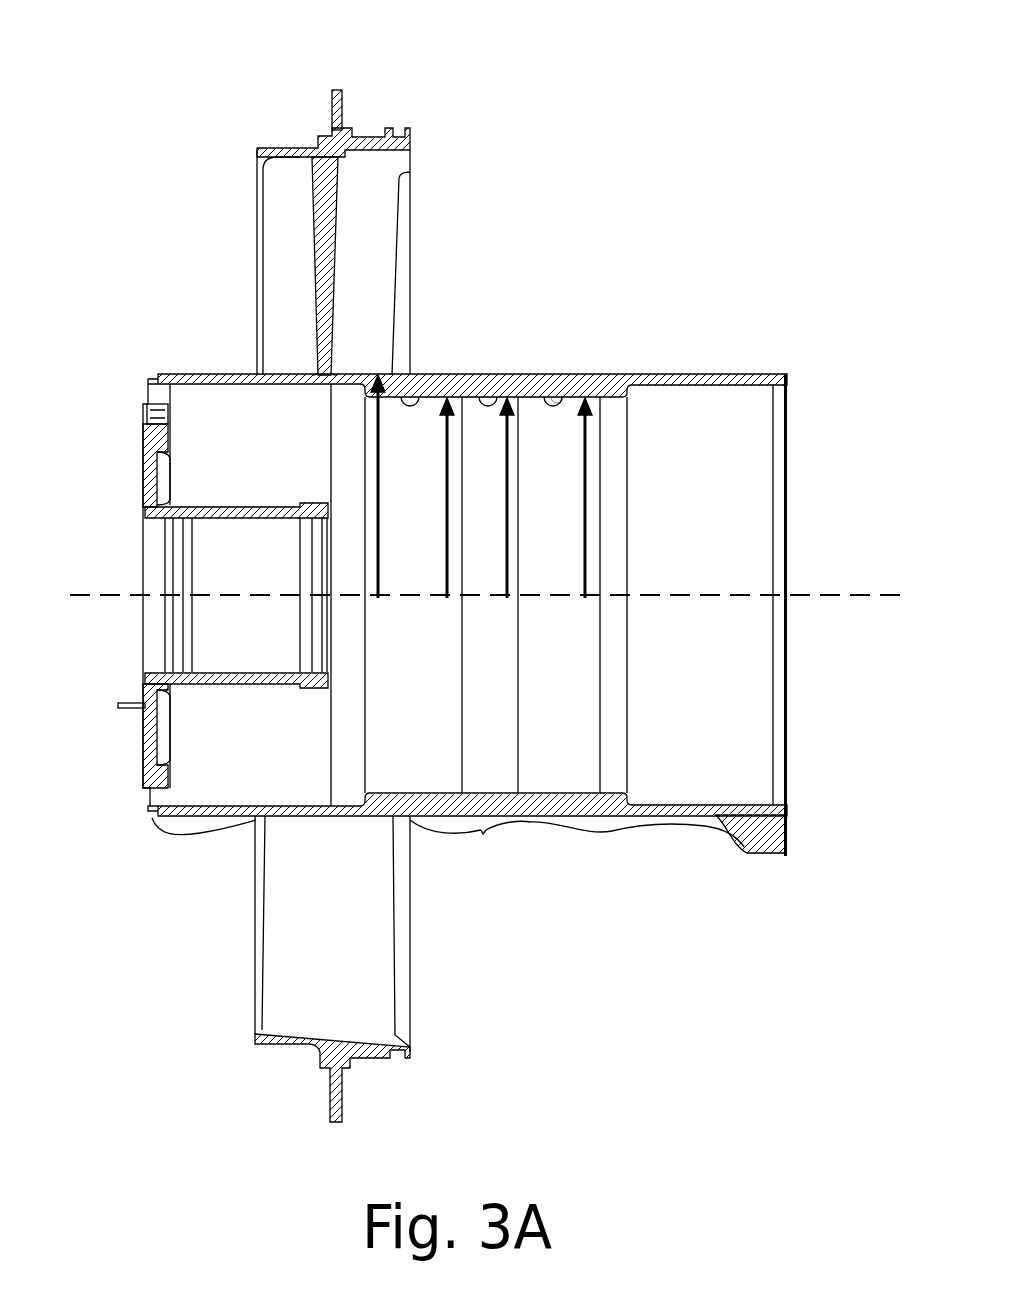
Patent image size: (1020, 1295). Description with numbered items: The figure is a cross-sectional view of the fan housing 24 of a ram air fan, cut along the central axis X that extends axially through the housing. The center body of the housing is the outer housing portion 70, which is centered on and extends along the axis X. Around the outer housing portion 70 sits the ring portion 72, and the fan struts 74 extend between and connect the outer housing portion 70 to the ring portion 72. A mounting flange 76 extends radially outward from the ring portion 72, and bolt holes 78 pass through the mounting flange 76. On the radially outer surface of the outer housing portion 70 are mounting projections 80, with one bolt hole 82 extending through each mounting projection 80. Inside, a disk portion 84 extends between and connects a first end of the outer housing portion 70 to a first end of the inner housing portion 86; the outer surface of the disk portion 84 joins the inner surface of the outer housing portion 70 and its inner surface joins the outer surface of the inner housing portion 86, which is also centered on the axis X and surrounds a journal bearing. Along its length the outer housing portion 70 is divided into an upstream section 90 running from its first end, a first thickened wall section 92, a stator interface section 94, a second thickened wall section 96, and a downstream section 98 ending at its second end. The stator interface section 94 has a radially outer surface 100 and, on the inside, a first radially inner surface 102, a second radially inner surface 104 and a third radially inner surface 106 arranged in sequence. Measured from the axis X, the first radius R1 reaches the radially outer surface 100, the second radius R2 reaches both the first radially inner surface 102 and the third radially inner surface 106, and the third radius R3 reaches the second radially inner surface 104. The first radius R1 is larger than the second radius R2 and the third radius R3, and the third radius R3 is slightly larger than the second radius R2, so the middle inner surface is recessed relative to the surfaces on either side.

The fan housing 24 is at (134, 116).
The outer housing portion 70 is at (720, 378).
The ring portion 72 is at (370, 140).
The fan struts 74 is at (330, 222).
The mounting flange 76 is at (330, 110).
The bolt holes 78 is at (342, 1097).
The mounting projections 80 is at (755, 838).
The bolt holes 82 is at (788, 838).
The disk portion 84 is at (148, 438).
The inner housing portion 86 is at (243, 512).
The upstream section 90 is at (258, 822).
The first thickened wall section 92 is at (350, 820).
The stator interface section 94 is at (483, 834).
The second thickened wall section 96 is at (612, 824).
The downstream section 98 is at (705, 826).
The radially outer surface 100 is at (550, 378).
The first radially inner surface 102 is at (433, 378).
The second radially inner surface 104 is at (508, 378).
The third radially inner surface 106 is at (572, 378).
The first radius R1 is at (378, 516).
The second radius R2 is at (652, 463).
The third radius R3 is at (507, 521).
The axis X is at (825, 595).